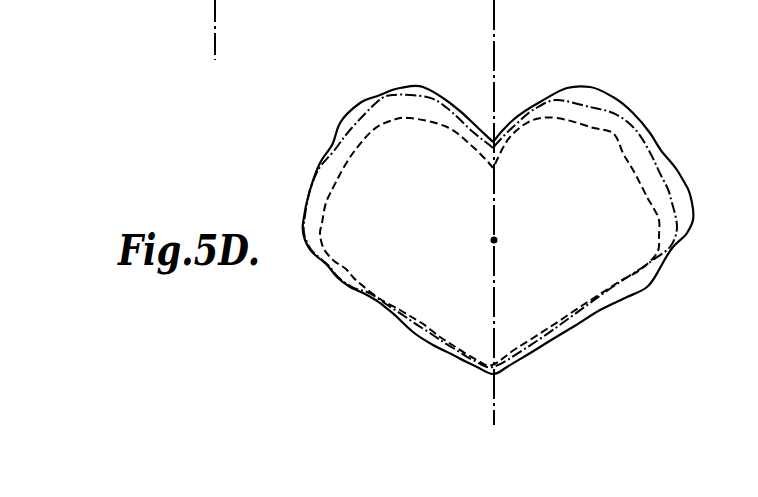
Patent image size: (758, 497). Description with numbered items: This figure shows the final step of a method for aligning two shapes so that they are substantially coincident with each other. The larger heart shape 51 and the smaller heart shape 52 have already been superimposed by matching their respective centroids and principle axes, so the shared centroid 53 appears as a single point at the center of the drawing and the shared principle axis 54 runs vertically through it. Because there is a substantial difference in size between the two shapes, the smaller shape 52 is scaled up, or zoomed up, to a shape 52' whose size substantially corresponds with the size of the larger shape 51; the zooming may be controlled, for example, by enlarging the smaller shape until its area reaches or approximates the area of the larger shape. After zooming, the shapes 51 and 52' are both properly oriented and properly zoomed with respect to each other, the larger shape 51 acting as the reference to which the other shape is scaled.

The heart shape 51 is at (643, 123).
The scaled-up shape 52' is at (517, 231).
The heart shape 52 is at (528, 241).
The centroid 53 is at (493, 240).
The principle axis 54 is at (493, 63).